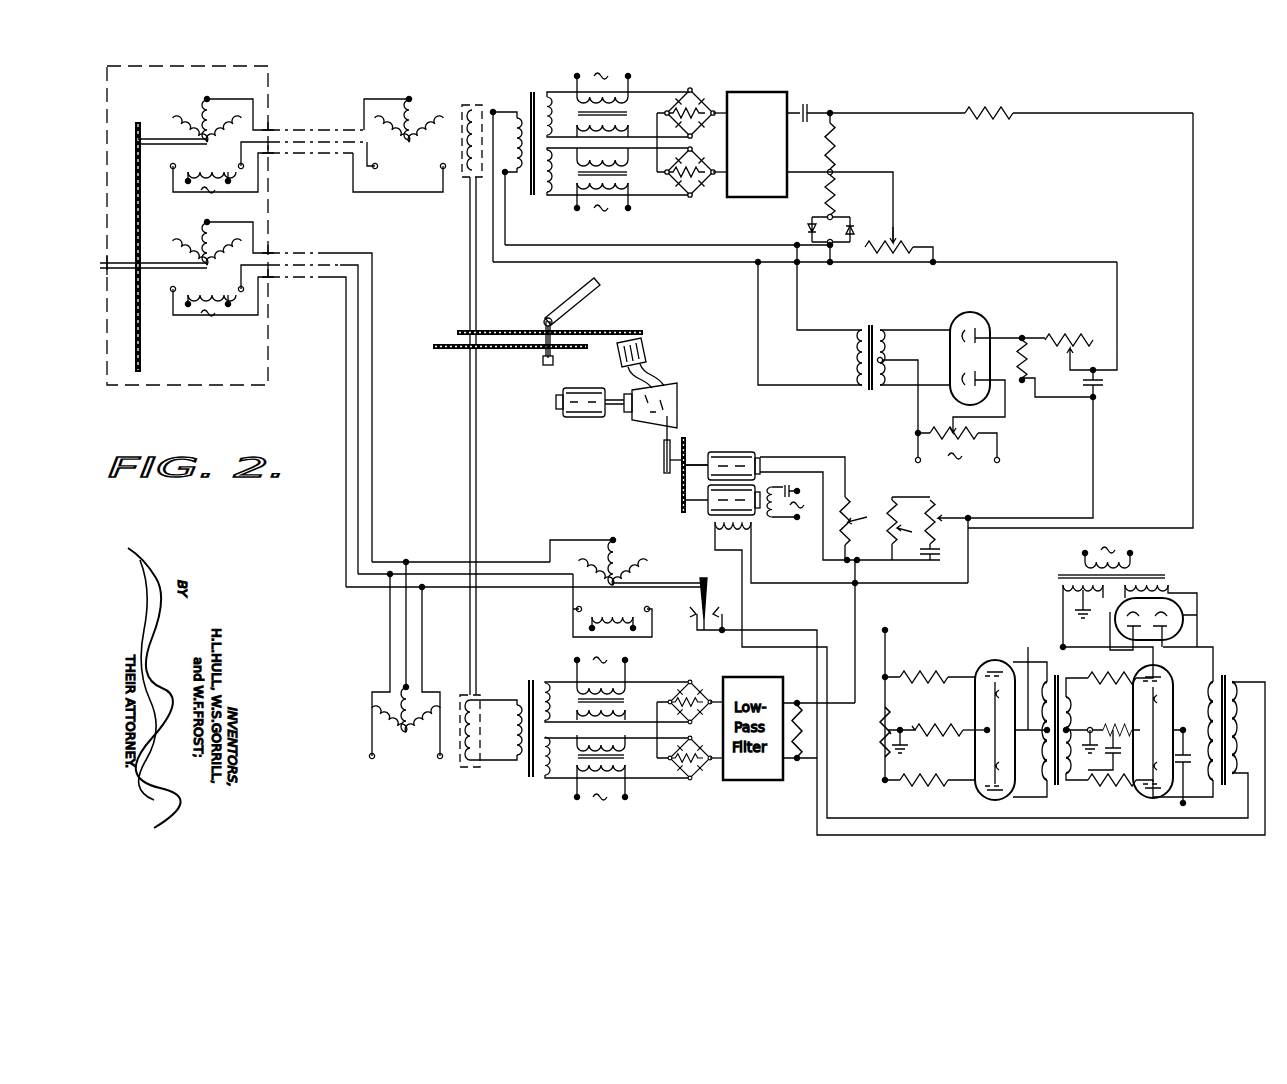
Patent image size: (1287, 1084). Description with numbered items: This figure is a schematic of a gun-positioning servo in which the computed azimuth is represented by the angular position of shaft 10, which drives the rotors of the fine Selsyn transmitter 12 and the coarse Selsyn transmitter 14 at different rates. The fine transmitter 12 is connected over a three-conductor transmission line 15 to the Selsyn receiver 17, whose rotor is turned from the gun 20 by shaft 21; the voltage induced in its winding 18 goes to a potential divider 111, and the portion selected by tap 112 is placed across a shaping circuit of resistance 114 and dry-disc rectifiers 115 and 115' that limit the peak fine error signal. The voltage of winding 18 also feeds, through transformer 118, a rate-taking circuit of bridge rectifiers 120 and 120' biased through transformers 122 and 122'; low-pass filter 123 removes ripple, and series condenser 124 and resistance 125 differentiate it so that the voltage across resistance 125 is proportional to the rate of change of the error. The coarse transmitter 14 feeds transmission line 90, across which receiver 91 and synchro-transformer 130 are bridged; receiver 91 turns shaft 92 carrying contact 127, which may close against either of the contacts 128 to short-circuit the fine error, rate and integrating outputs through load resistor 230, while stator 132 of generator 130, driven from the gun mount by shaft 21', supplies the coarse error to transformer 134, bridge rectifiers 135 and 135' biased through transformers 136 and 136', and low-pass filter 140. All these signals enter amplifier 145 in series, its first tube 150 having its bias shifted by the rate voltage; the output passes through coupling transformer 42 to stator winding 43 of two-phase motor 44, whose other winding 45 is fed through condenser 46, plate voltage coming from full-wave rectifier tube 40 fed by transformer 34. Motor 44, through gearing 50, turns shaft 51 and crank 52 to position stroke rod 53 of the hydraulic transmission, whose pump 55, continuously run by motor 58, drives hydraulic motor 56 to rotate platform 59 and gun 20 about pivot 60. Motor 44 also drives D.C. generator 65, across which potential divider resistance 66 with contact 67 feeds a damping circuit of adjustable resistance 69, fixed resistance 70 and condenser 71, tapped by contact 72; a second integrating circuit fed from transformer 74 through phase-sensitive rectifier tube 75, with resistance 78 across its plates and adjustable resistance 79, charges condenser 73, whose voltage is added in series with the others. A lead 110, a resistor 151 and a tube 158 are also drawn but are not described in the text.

The shaft 10 is at (132, 264).
The fine Selsyn transmitter 12 is at (184, 123).
The coarse Selsyn transmitter 14 is at (184, 250).
The three-conductor transmission line 15 is at (340, 140).
The Selsyn receiver 17 is at (447, 98).
The winding 18 is at (472, 110).
The gun 20 is at (597, 285).
The shaft 21 is at (490, 436).
The shaft 21' is at (494, 380).
The transformer 34 is at (1165, 578).
The full-wave rectifier tube 40 is at (1183, 622).
The coupling transformer 42 is at (1228, 680).
The stator winding 43 is at (745, 528).
The two-phase motor 44 is at (708, 516).
The stator winding 45 is at (775, 480).
The condenser 46 is at (804, 484).
The gearing 50 is at (690, 447).
The shaft 51 is at (714, 452).
The crank 52 is at (663, 462).
The stroke rod 53 is at (664, 438).
The variable displacement pump 55 is at (677, 396).
The variable speed hydraulic motor 56 is at (646, 348).
The motor 58 is at (565, 390).
The platform 59 is at (560, 328).
The pivot 60 is at (553, 361).
The D. C. generator 65 is at (742, 452).
The potential divider resistance 66 is at (832, 528).
The adjustable contact 67 is at (864, 520).
The adjustable resistance 69 is at (916, 532).
The fixed resistance 70 is at (944, 556).
The condenser 71 is at (942, 560).
The adjustable contact 72 is at (942, 520).
The condenser 73 is at (1103, 388).
The transformer 74 is at (872, 390).
The rectifier tube 75 is at (990, 318).
The resistance 78 is at (1027, 366).
The adjustable resistance 79 is at (1064, 331).
The transmission line 90 is at (342, 271).
The receiver 91 is at (612, 531).
The shaft 92 is at (653, 582).
The lead 110 is at (670, 245).
The potential divider 111 is at (905, 236).
The tap 112 is at (896, 232).
The resistance 114 is at (842, 196).
The rectifier 115 is at (810, 239).
The rectifier 115' is at (872, 217).
The transformer 118 is at (534, 90).
The bridge type rectifier 120 is at (699, 101).
The bridge type rectifier 120' is at (701, 180).
The transformer 122 is at (623, 100).
The transformer 122' is at (625, 181).
The low-pass filter 123 is at (750, 92).
The condenser 124 is at (818, 108).
The resistance 125 is at (848, 138).
The contact 127 is at (725, 566).
The contact 128 is at (736, 616).
The Selsyn signal generator 130 is at (424, 773).
The stator 132 is at (472, 764).
The transformer 134 is at (530, 780).
The bridge type rectifier 135 is at (696, 687).
The bridge type rectifier 135' is at (703, 771).
The transformer 136 is at (622, 685).
The transformer 136' is at (623, 770).
The low-pass filter 140 is at (770, 782).
The amplifier 145 is at (1104, 808).
The first amplifier tube 150 is at (976, 660).
The resistor 151 is at (958, 714).
The tube 158 is at (1134, 668).
The resistor 230 is at (1010, 106).